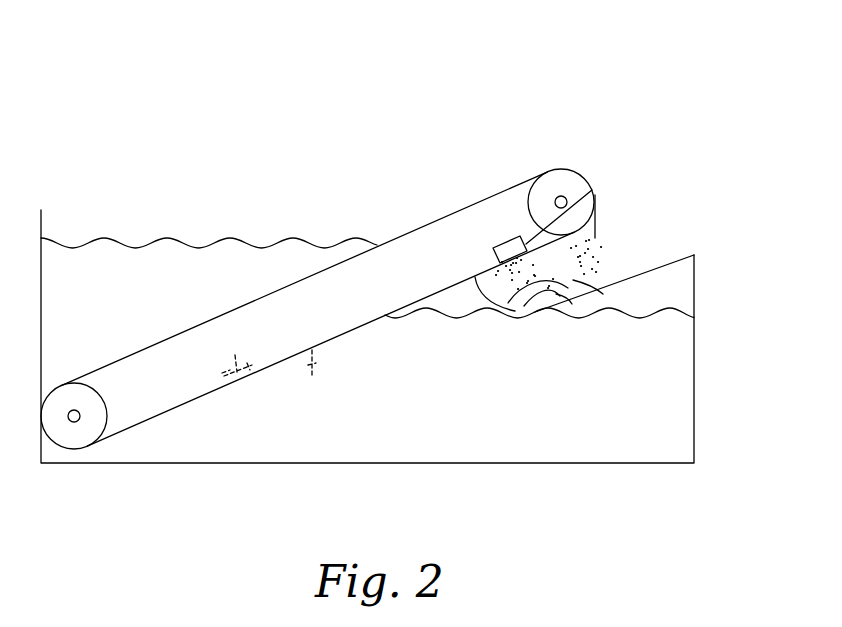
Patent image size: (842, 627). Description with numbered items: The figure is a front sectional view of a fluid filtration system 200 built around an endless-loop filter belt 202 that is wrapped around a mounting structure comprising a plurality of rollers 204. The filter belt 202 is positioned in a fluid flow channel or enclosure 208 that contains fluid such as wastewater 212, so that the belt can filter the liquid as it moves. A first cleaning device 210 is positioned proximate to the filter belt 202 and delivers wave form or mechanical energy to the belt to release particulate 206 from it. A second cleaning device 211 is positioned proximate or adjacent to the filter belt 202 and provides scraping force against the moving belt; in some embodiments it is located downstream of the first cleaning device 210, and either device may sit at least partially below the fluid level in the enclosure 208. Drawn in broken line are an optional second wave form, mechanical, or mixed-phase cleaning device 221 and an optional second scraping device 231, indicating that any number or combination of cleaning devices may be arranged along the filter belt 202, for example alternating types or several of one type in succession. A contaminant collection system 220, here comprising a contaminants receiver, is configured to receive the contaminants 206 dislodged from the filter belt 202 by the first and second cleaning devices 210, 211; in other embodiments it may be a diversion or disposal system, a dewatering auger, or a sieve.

The fluid filtration system 200 is at (704, 85).
The endless-loop filter belt 202 is at (350, 258).
The rollers 204 is at (560, 183).
The particulate 206 is at (603, 273).
The fluid flow channel or enclosure 208 is at (695, 373).
The first cleaning device 210 is at (592, 190).
The second cleaning device 211 is at (597, 228).
The wastewater 212 is at (163, 277).
The contaminant collection system 220 is at (645, 279).
The optional second wave form, mechanical, or mixed-phase cleaning device 221 is at (235, 353).
The optional second scraping device 231 is at (312, 372).